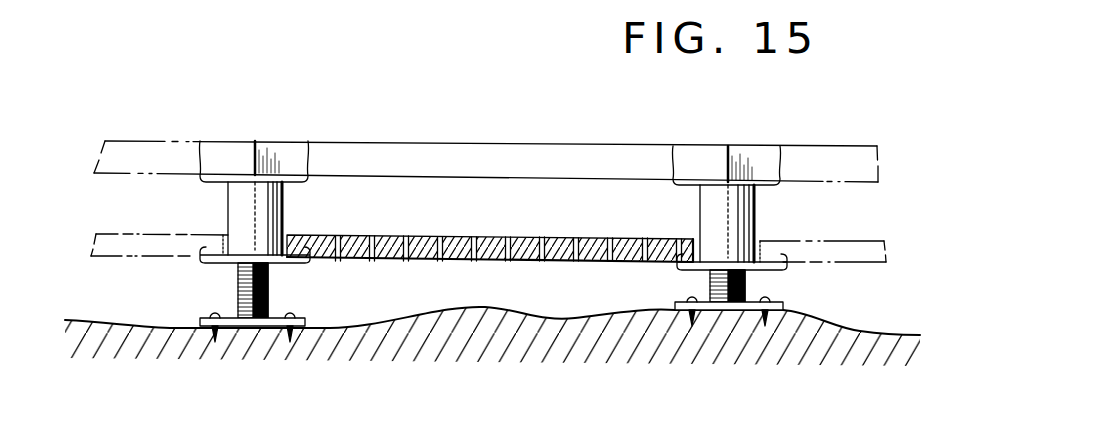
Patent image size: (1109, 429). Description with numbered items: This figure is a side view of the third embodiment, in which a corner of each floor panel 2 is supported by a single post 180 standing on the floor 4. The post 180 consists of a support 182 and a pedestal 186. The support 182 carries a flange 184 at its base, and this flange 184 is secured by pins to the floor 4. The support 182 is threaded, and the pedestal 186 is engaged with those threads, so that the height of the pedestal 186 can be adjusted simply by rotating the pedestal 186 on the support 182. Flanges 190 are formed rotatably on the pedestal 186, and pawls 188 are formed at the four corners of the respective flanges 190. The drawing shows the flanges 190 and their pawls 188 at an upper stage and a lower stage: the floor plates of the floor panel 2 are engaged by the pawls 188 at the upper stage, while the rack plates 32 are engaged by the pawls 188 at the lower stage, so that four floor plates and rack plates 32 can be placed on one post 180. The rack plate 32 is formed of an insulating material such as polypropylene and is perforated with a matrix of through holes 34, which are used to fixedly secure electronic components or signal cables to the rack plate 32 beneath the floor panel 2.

The floor panel 2 is at (141, 135).
The floor 4 is at (884, 330).
The rack plate 32 is at (557, 262).
The through holes 34 is at (405, 262).
The post 180 is at (292, 216).
The support 182 is at (237, 290).
The flange 184 is at (255, 327).
The pedestal 186 is at (757, 218).
The pawls 188 is at (200, 141).
The flanges 190 is at (728, 146).